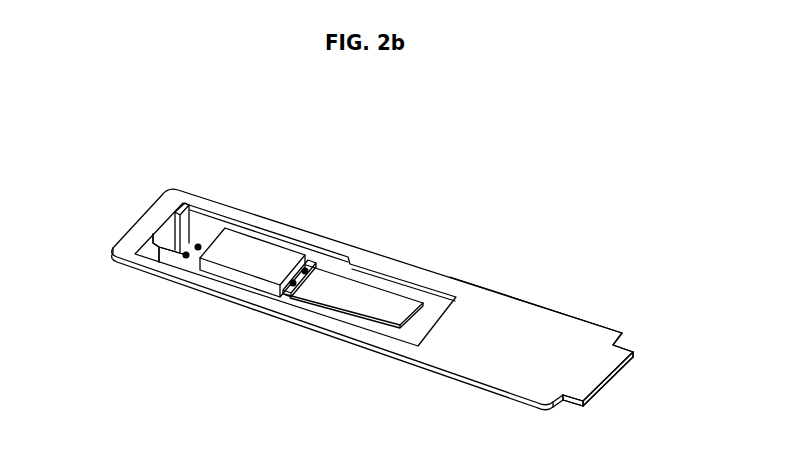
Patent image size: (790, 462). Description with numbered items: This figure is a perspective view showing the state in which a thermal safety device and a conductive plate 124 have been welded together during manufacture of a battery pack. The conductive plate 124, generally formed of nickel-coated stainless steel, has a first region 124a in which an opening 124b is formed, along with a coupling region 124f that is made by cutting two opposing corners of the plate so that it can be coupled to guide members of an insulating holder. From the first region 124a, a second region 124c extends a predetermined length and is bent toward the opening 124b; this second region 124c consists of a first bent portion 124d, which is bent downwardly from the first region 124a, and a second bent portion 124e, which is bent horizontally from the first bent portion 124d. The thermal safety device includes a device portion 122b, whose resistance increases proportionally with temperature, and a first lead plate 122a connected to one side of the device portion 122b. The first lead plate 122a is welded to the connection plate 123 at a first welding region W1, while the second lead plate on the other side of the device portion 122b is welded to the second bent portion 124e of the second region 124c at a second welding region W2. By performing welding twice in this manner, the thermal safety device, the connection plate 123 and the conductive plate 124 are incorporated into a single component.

The conductive plate 124 is at (125, 212).
The first region 124a is at (506, 317).
The opening 124b is at (357, 262).
The second region 124c is at (235, 133).
The first bent portion 124d is at (164, 233).
The second bent portion 124e is at (184, 243).
The coupling region 124f is at (623, 345).
The first lead plate 122a is at (298, 292).
The device portion 122b is at (263, 250).
The connection plate 123 is at (395, 300).
The first welding region W1 is at (305, 274).
The second welding region W2 is at (198, 250).